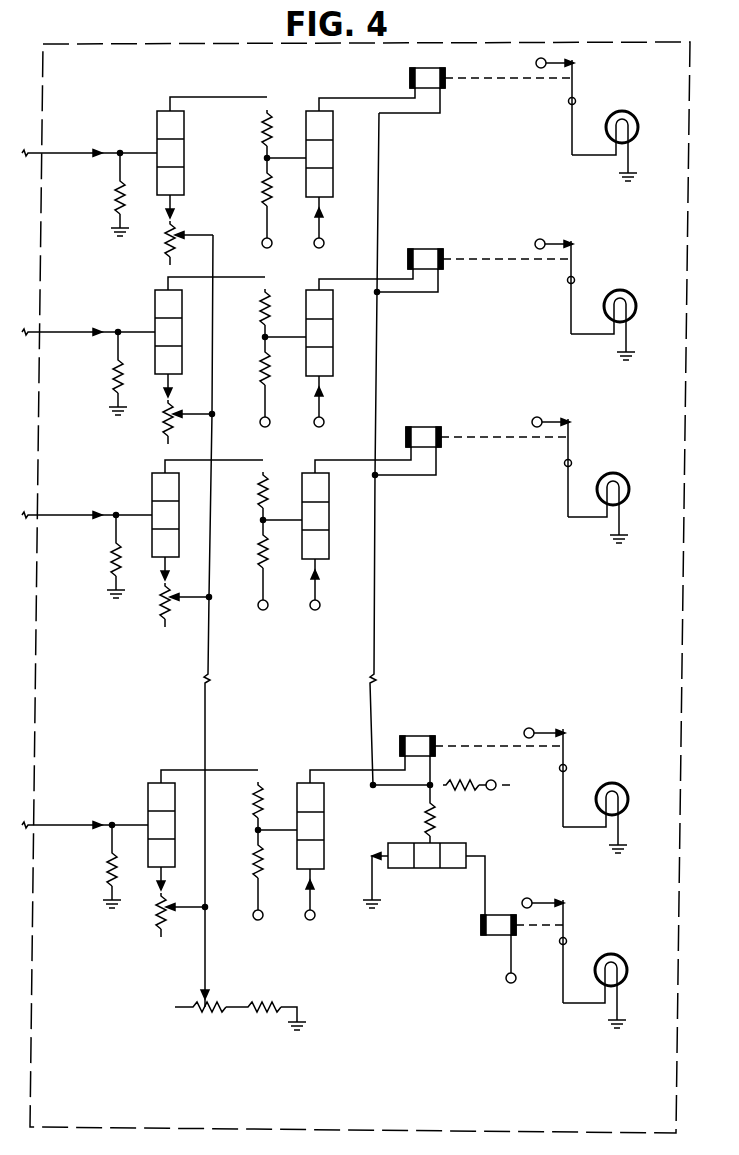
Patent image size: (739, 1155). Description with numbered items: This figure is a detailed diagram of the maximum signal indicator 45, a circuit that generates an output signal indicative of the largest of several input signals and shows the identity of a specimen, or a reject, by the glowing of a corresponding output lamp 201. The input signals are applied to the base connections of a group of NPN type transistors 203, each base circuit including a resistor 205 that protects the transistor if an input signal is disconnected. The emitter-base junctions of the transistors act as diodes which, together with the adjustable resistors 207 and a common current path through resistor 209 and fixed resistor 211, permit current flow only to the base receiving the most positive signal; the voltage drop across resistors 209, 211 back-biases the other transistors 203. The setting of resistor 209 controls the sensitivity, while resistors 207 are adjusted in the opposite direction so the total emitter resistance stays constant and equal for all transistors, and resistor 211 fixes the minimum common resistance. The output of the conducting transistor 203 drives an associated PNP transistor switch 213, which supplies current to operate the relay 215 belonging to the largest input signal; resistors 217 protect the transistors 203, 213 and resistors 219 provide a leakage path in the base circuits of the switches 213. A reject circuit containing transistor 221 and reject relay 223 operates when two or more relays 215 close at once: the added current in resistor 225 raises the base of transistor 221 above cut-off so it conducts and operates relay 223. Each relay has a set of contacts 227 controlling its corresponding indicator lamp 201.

The maximum signal indicator 45 is at (664, 44).
The output lamp 201 is at (635, 139).
The NPN type transistor 203 is at (184, 189).
The resistor 205 is at (114, 199).
The resistor 207 is at (172, 248).
The resistor 209 is at (212, 1013).
The fixed resistor 211 is at (257, 1013).
The PNP transistor switch 213 is at (333, 183).
The relay 215 is at (408, 78).
The resistor 217 is at (262, 124).
The resistor 219 is at (262, 186).
The transistor 221 is at (458, 843).
The reject relay 223 is at (481, 928).
The resistor 225 is at (460, 784).
The contacts 227 is at (575, 86).